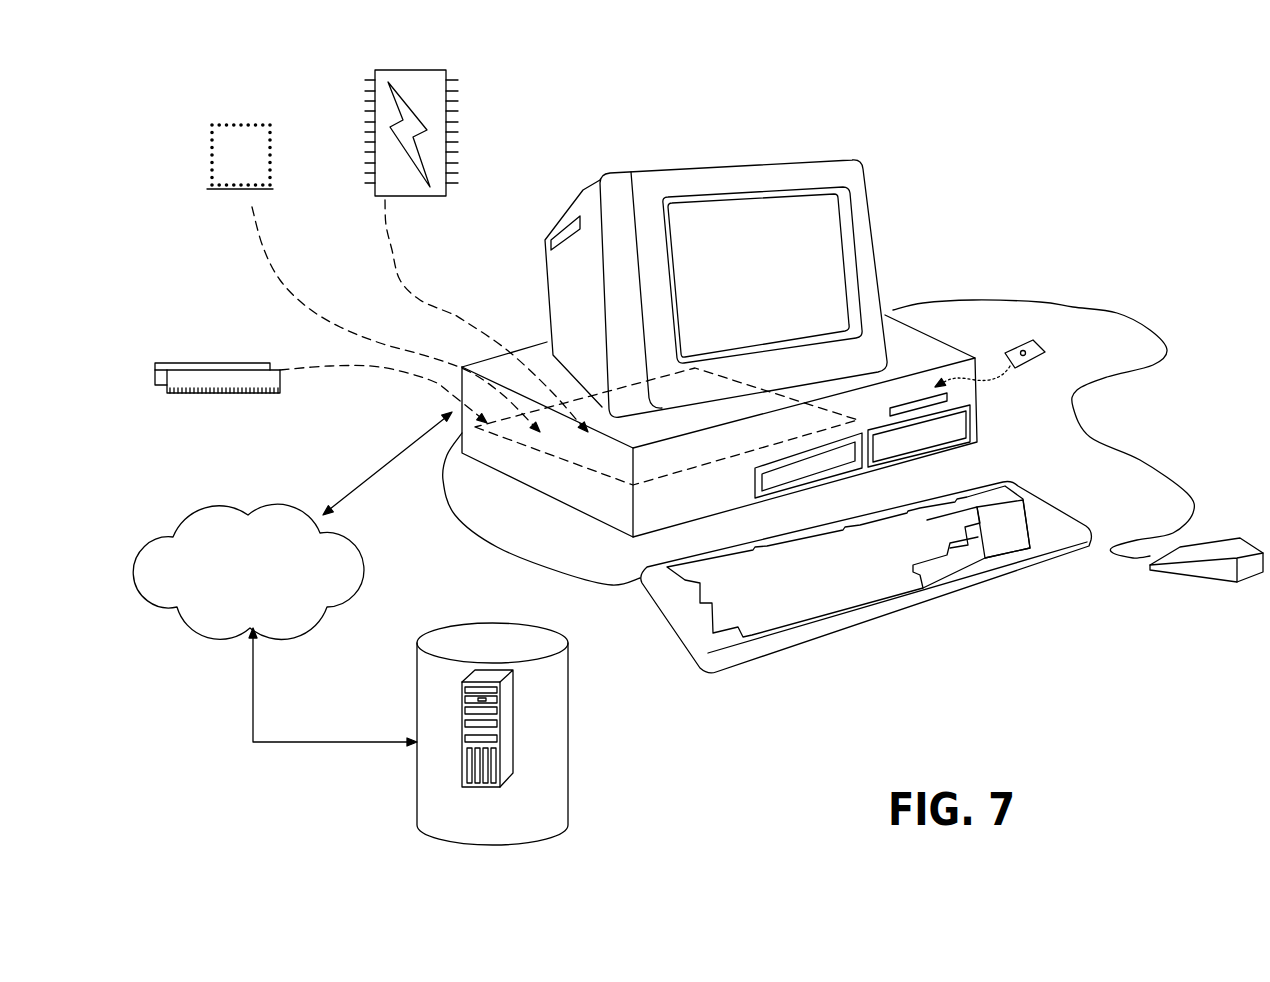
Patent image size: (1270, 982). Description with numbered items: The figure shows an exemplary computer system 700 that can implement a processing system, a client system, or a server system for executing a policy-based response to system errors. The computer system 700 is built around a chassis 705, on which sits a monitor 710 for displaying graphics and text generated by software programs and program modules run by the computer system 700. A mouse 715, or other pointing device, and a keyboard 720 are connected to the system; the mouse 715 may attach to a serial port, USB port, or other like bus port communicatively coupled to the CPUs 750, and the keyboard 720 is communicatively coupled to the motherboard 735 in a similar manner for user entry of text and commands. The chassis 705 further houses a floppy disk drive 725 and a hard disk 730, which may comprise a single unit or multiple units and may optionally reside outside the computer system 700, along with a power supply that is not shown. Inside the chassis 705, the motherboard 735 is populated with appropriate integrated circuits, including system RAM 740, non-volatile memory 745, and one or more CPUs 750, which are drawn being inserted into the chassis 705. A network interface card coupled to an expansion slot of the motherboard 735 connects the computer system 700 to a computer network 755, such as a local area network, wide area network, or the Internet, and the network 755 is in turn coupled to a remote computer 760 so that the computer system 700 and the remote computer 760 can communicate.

The computer system 700 is at (1173, 685).
The chassis 705 is at (523, 349).
The monitor 710 is at (870, 193).
The mouse 715 is at (1204, 570).
The keyboard 720 is at (963, 588).
The floppy disk drive 725 is at (917, 403).
The hard disk 730 is at (960, 425).
The motherboard 735 is at (597, 478).
The system RAM 740 is at (183, 363).
The non-volatile memory 745 is at (425, 70).
The CPU 750 is at (281, 127).
The computer network 755 is at (262, 505).
The remote computer 760 is at (568, 770).